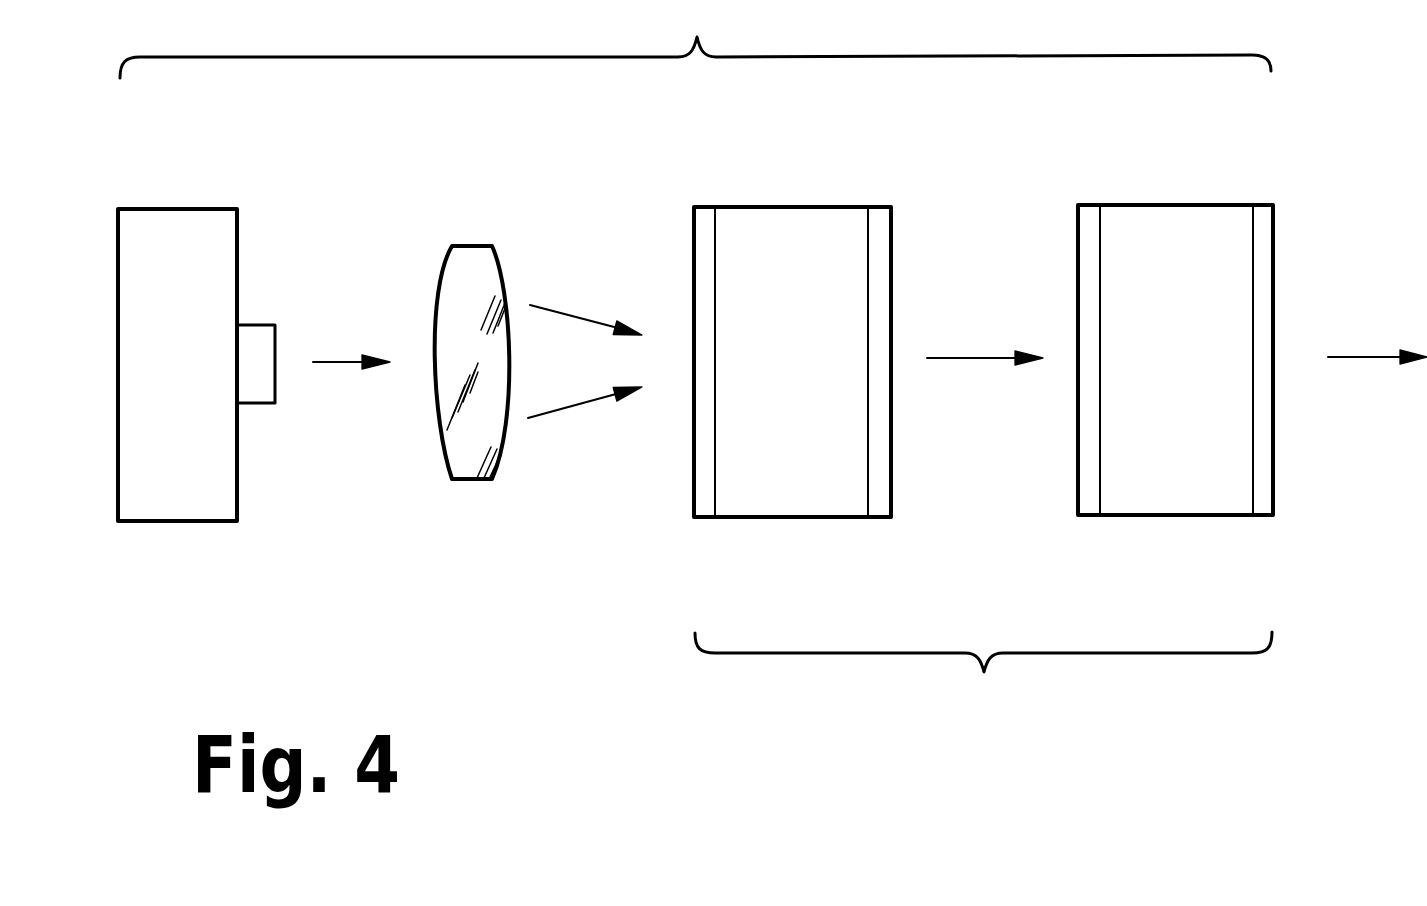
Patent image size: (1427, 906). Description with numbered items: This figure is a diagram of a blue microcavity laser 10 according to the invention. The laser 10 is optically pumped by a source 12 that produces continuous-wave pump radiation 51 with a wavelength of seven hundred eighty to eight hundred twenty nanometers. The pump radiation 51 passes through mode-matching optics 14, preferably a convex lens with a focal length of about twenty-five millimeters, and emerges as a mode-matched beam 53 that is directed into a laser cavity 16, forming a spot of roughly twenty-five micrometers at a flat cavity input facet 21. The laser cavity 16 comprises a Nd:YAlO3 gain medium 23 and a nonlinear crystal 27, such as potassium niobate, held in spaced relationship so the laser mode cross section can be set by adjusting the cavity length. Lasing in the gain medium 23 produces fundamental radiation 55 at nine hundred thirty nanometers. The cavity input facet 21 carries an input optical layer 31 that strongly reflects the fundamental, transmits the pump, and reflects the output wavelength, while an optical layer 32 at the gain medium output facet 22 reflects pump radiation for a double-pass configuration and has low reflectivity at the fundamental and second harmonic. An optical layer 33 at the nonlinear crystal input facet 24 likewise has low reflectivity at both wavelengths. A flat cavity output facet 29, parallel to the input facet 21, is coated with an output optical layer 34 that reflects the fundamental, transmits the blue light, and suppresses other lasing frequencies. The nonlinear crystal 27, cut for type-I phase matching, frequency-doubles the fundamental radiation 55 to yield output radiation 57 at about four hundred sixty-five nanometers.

The blue microcavity laser 10 is at (695, 39).
The source 12 is at (275, 330).
The mode-matching optics 14 is at (490, 246).
The laser cavity 16 is at (983, 674).
The cavity input facet 21 is at (713, 450).
The gain medium output facet 22 is at (870, 433).
The gain medium 23 is at (812, 207).
The nonlinear crystal input facet 24 is at (1098, 465).
The nonlinear crystal 27 is at (1190, 205).
The cavity output facet 29 is at (1258, 465).
The input optical layer 31 is at (717, 500).
The optical layer 32 is at (866, 497).
The optical layer 33 is at (1103, 495).
The output optical layer 34 is at (1249, 493).
The pump radiation 51 is at (327, 363).
The mode-matched beam 53 is at (582, 316).
The fundamental radiation 55 is at (953, 358).
The output radiation 57 is at (1358, 357).